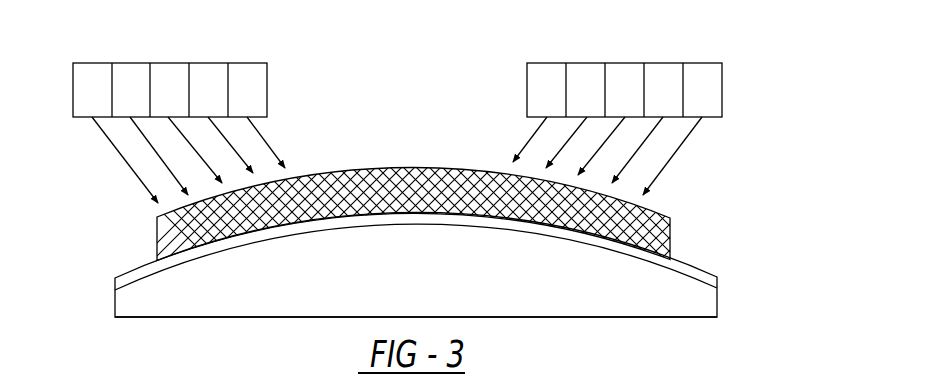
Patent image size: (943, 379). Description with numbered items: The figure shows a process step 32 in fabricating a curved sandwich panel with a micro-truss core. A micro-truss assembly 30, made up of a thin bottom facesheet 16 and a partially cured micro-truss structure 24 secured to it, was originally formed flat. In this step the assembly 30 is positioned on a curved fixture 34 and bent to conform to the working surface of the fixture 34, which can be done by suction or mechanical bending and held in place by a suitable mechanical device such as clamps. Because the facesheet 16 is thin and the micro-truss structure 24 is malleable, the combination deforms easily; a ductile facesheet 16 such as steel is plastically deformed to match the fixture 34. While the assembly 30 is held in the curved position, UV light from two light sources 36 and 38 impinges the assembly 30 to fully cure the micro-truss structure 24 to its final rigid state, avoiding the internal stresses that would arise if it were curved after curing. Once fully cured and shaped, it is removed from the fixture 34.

The bottom flat facesheet 16 is at (140, 272).
The micro-truss structure 24 is at (417, 193).
The micro-truss assembly 30 is at (372, 135).
The process step 32 is at (697, 43).
The curved fixture 34 is at (660, 307).
The light source 36 is at (267, 88).
The light source 38 is at (527, 88).